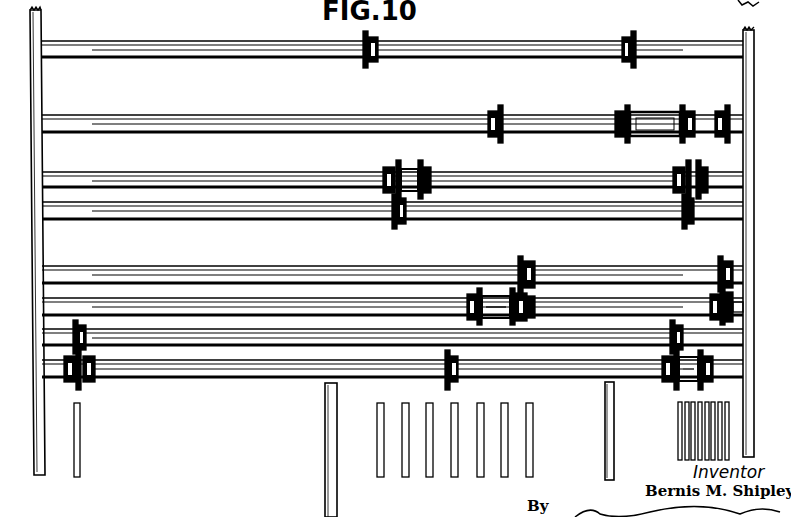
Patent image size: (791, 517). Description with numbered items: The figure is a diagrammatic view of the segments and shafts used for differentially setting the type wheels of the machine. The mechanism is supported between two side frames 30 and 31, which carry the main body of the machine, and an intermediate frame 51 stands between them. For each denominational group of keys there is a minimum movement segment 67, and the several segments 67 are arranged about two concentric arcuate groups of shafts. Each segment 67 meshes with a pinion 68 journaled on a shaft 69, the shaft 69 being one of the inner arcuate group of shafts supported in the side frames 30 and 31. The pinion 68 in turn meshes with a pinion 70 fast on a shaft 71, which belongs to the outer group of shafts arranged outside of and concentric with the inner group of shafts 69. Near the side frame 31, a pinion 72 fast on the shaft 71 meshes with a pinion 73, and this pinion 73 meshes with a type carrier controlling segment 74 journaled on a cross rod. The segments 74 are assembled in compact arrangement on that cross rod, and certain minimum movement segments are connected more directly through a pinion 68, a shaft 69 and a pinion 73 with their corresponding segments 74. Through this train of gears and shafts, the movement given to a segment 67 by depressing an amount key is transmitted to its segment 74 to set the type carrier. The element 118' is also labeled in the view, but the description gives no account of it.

The side frame 30 is at (41, 91).
The side frame 31 is at (745, 79).
The upper element 118' is at (644, 8).
The pinion 70 is at (527, 262).
The shaft 71 is at (563, 268).
The pinion 72 is at (729, 258).
The shaft 69 is at (558, 305).
The pinion 68 is at (525, 318).
The pinion 73 is at (735, 318).
The minimum movement segment 67 is at (533, 413).
The intermediate frame 51 is at (615, 408).
The type carrier controlling segment 74 is at (730, 431).